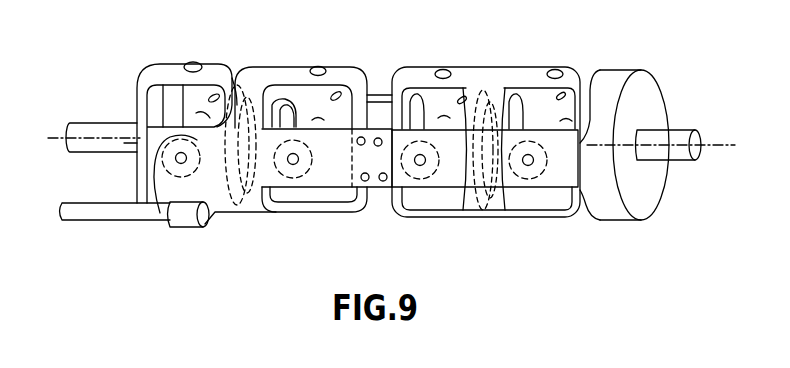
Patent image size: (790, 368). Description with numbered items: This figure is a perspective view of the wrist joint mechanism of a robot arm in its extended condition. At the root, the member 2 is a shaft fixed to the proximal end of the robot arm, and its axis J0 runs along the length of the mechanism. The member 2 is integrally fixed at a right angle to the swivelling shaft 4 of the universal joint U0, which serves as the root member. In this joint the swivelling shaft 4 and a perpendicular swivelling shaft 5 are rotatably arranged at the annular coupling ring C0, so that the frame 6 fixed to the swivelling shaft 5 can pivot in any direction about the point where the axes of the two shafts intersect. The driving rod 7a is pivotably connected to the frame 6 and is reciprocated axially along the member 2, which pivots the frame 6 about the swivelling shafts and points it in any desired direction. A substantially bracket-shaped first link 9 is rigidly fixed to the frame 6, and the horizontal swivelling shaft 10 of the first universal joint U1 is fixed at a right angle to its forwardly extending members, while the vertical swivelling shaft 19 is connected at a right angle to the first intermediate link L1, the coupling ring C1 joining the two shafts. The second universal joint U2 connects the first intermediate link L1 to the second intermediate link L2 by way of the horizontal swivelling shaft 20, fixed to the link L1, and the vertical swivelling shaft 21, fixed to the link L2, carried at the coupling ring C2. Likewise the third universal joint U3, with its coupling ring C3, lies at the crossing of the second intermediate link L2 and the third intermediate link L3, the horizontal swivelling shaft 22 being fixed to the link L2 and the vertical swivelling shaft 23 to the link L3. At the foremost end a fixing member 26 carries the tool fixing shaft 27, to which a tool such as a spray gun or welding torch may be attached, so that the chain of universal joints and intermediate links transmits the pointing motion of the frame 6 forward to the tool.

The member 2 is at (98, 123).
The swivelling shaft 4 is at (194, 62).
The swivelling shaft 5 is at (178, 164).
The frame 6 is at (250, 203).
The driving rod 7a is at (101, 219).
The first link 9 is at (282, 66).
The horizontal swivelling shaft 10 is at (318, 66).
The vertical swivelling shaft 19 is at (293, 167).
The horizontal swivelling shaft 20 is at (416, 193).
The vertical swivelling shaft 21 is at (440, 68).
The horizontal swivelling shaft 22 is at (554, 68).
The vertical swivelling shaft 23 is at (527, 166).
The fixing member 26 is at (648, 70).
The tool fixing shaft 27 is at (683, 128).
The axis of the member J0 is at (131, 156).
The universal joint U0 is at (238, 63).
The first universal joint U1 is at (346, 62).
The second universal joint U2 is at (460, 62).
The third universal joint U3 is at (569, 62).
The annular coupling ring C0 is at (205, 98).
The coupling ring C1 is at (334, 106).
The coupling ring C2 is at (457, 98).
The coupling ring C3 is at (585, 92).
The first intermediate link L1 is at (331, 170).
The second intermediate link L2 is at (494, 82).
The third intermediate link L3 is at (567, 182).